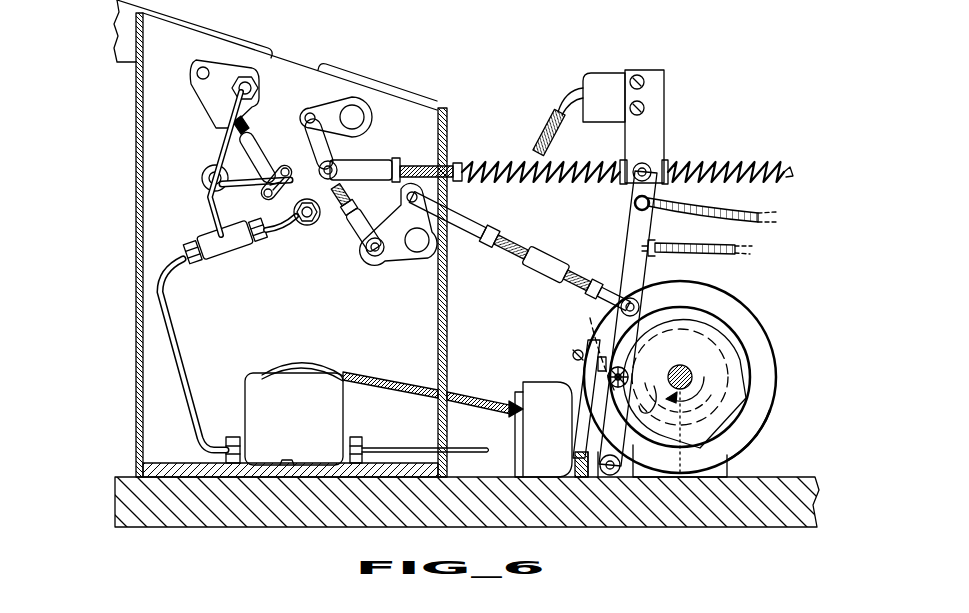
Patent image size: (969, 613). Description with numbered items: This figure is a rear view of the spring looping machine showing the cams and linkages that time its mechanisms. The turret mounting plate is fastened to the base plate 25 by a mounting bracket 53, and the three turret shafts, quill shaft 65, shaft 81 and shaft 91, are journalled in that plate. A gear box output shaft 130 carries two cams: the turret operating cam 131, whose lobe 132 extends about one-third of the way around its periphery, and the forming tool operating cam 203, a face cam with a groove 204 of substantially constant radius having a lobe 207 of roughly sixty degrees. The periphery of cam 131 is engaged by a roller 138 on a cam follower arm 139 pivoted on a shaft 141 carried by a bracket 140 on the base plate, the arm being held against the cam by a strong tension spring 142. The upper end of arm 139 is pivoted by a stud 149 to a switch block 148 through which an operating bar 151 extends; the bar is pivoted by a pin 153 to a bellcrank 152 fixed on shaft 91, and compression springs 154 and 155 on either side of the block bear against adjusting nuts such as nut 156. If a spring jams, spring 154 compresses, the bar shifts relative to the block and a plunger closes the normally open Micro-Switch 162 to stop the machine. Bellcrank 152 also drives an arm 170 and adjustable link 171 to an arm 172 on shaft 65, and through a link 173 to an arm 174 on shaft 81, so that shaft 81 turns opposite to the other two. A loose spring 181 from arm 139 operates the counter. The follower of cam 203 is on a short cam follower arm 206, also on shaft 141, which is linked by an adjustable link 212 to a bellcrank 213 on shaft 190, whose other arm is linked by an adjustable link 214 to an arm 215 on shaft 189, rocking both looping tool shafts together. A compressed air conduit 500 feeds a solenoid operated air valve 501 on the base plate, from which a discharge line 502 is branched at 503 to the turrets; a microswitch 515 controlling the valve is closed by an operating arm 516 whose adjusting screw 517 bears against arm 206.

The base plate 25 is at (235, 513).
The mounting bracket 53 is at (430, 103).
The quill shaft 65 is at (258, 83).
The shaft 81 is at (213, 172).
The shaft 91 is at (309, 228).
The output shaft 130 is at (683, 367).
The turret operating cam 131 is at (722, 368).
The lobe 132 is at (738, 424).
The roller 138 is at (632, 362).
The cam follower arm 139 is at (628, 258).
The bracket 140 is at (597, 478).
The shaft 141 is at (614, 460).
The tension spring 142 is at (722, 252).
The switch block 148 is at (652, 150).
The stud 149 is at (636, 165).
The operating bar 151 is at (791, 168).
The bellcrank 152 is at (336, 212).
The pin 153 is at (337, 167).
The spring 154 is at (520, 160).
The spring 155 is at (738, 163).
The adjusting nut 156 is at (458, 163).
The Micro-Switch 162 is at (604, 74).
The arm 170 is at (282, 232).
The adjustable link 171 is at (255, 160).
The arm 172 is at (232, 70).
The link 173 is at (276, 182).
The arm 174 is at (223, 200).
The loose spring 181 is at (725, 208).
The shaft 189 is at (365, 117).
The shaft 190 is at (428, 252).
The forming tool operating cam 203 is at (766, 386).
The groove 204 is at (732, 330).
The cam follower arm 206 is at (596, 318).
The lobe 207 is at (655, 391).
The adjustable link 212 is at (506, 254).
The bellcrank 213 is at (393, 250).
The adjustable link 214 is at (360, 205).
The arm 215 is at (339, 98).
The compressed air conduit 500 is at (382, 447).
The solenoid operated air valve 501 is at (257, 398).
The discharge line 502 is at (182, 346).
The branch 503 is at (208, 238).
The microswitch 515 is at (530, 426).
The operating arm 516 is at (584, 379).
The adjusting screw 517 is at (576, 351).